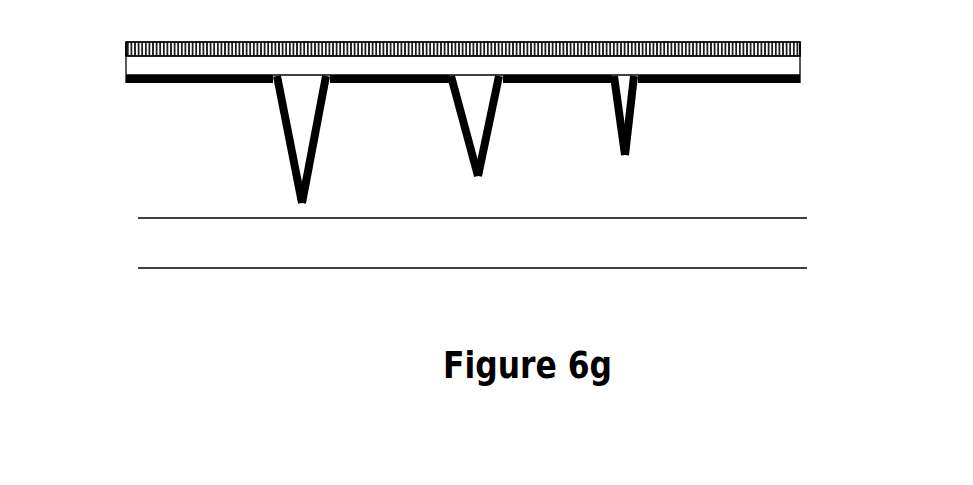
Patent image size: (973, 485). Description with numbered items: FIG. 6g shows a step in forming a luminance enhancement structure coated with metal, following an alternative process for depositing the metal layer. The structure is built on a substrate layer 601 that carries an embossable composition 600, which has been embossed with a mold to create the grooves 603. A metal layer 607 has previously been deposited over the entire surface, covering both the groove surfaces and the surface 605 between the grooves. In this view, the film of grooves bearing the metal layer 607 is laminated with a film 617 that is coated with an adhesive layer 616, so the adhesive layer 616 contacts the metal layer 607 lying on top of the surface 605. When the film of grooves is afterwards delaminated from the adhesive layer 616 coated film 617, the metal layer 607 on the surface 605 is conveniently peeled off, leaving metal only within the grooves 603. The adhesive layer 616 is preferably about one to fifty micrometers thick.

The film 617 is at (784, 49).
The adhesive layer 616 is at (797, 67).
The metal layer 607 is at (215, 92).
The surface between the grooves 605 is at (726, 92).
The grooves 603 is at (486, 108).
The embossable composition 600 is at (820, 168).
The substrate layer 601 is at (800, 243).